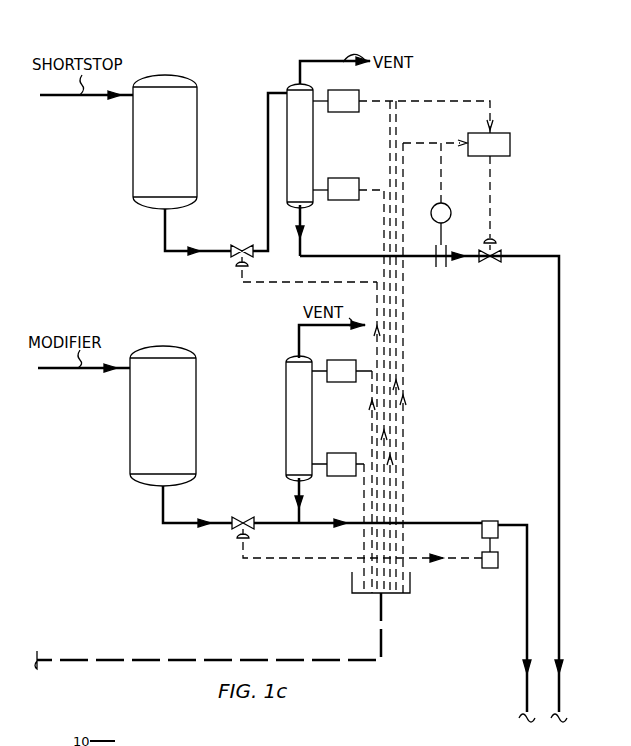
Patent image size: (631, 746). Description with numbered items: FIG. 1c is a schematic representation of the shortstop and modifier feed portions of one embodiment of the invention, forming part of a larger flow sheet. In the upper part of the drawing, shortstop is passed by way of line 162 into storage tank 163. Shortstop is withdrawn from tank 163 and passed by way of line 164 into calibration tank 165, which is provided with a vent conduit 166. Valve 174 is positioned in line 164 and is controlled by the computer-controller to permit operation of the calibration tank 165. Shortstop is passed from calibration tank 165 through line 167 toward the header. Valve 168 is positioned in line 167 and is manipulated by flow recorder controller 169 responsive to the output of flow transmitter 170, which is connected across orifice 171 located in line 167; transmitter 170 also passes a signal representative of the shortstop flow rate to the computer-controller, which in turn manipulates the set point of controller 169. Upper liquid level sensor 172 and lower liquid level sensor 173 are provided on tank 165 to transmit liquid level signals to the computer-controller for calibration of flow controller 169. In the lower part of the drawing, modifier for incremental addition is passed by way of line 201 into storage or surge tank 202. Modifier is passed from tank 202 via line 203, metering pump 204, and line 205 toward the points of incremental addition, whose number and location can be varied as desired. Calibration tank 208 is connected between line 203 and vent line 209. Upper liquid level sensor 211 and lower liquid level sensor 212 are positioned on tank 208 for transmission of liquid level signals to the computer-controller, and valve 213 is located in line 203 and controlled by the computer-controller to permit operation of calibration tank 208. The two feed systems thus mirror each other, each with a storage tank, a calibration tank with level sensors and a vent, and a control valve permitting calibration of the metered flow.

The line 162 is at (49, 96).
The storage tank 163 is at (179, 135).
The line 164 is at (162, 244).
The calibration tank 165 is at (313, 204).
The vent conduit 166 is at (318, 60).
The line 167 is at (561, 472).
The valve 168 is at (498, 242).
The flow recorder controller 169 is at (511, 144).
The flow transmitter 170 is at (470, 204).
The orifice 171 is at (447, 262).
The upper liquid level sensor 172 is at (352, 90).
The lower liquid level sensor 173 is at (332, 177).
The valve 174 is at (236, 258).
The line 201 is at (48, 368).
The storage or surge tank 202 is at (178, 404).
The line 203 is at (175, 531).
The metering pump 204 is at (484, 571).
The line 205 is at (524, 690).
The calibration tank 208 is at (286, 434).
The vent line 209 is at (299, 350).
The upper liquid level sensor 211 is at (346, 360).
The lower liquid level sensor 212 is at (352, 454).
The valve 213 is at (238, 550).